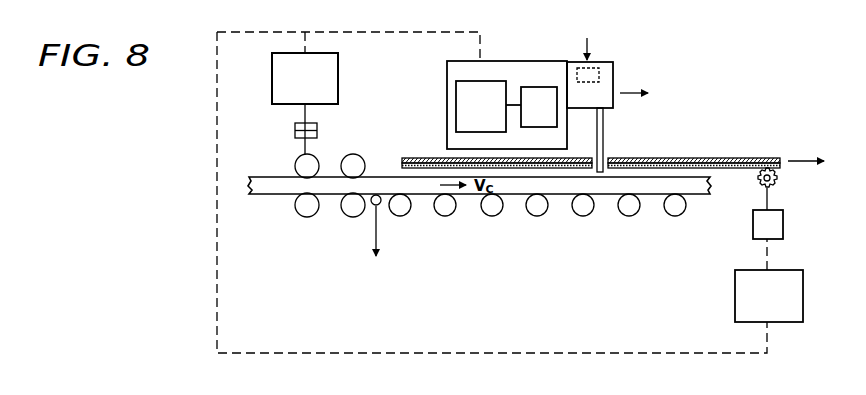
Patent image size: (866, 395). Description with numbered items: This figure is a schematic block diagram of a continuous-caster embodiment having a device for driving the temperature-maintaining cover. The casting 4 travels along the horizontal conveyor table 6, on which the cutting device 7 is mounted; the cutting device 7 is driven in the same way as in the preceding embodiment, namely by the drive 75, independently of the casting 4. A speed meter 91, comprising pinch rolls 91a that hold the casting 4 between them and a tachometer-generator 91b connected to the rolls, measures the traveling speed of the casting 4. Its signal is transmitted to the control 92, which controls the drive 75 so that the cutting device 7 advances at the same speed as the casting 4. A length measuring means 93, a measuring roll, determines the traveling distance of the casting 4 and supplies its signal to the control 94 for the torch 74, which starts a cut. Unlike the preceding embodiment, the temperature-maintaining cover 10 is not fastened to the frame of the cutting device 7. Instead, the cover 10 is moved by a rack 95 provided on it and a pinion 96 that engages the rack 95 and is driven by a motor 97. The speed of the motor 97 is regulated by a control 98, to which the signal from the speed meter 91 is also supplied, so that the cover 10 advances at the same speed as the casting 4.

The casting 4 is at (658, 194).
The conveyor table 6 is at (628, 216).
The cutting device 7 is at (486, 74).
The temperature-maintaining cover 10 is at (697, 157).
The torch 74 is at (603, 132).
The drive 75 is at (536, 87).
The speed meter 91 is at (336, 120).
The pinch rolls 91a is at (305, 214).
The tachometer-generator 91b is at (338, 63).
The control 92 is at (463, 98).
The length measuring means 93 is at (371, 207).
The control 94 is at (600, 75).
The rack 95 is at (729, 169).
The pinion 96 is at (780, 179).
The motor 97 is at (783, 223).
The control 98 is at (797, 297).